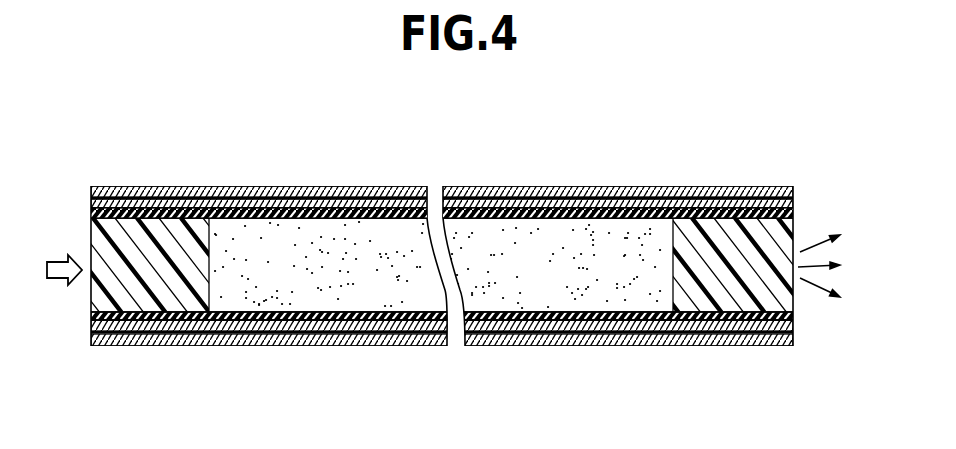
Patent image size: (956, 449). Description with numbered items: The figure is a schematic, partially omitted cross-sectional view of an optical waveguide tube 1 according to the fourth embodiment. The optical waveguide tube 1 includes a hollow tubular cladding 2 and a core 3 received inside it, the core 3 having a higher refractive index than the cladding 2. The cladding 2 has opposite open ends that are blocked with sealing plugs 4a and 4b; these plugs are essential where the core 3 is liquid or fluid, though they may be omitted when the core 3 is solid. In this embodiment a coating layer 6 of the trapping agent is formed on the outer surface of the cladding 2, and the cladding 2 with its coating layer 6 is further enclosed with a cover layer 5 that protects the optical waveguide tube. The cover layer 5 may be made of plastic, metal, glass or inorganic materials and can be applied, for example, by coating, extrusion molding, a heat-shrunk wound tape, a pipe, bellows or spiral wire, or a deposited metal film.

The optical waveguide tube 1 is at (609, 178).
The hollow tubular cladding 2 is at (268, 210).
The core 3 is at (285, 290).
The sealing plug 4a is at (172, 227).
The sealing plug 4b is at (728, 222).
The cover layer 5 is at (365, 197).
The coating layer 6 is at (398, 330).